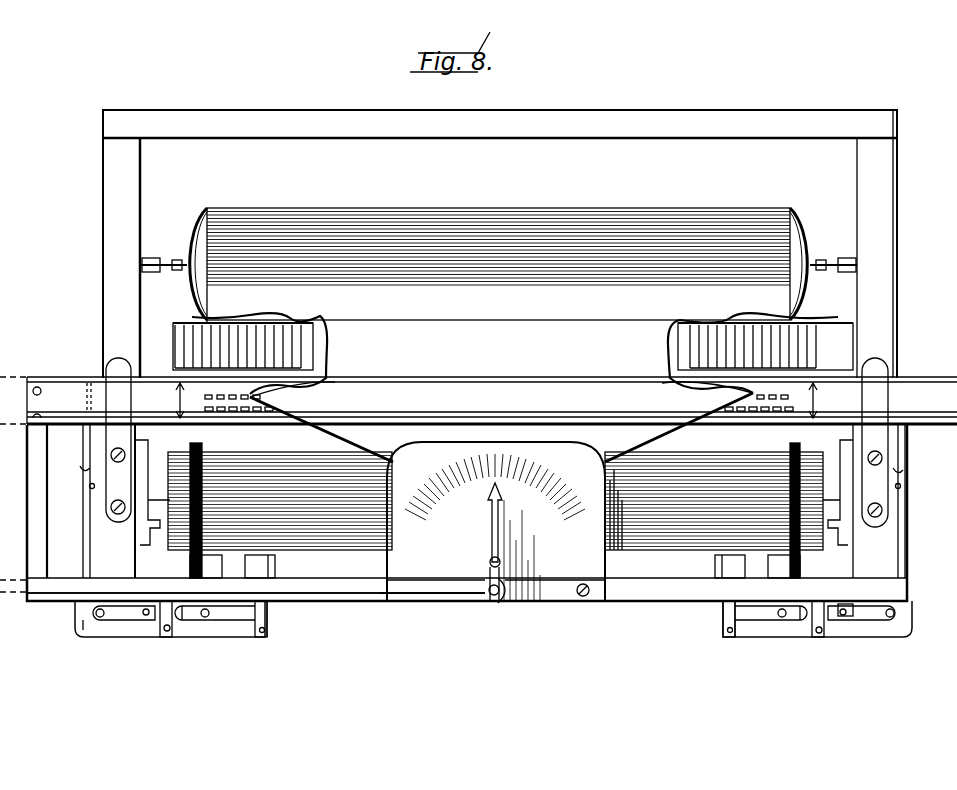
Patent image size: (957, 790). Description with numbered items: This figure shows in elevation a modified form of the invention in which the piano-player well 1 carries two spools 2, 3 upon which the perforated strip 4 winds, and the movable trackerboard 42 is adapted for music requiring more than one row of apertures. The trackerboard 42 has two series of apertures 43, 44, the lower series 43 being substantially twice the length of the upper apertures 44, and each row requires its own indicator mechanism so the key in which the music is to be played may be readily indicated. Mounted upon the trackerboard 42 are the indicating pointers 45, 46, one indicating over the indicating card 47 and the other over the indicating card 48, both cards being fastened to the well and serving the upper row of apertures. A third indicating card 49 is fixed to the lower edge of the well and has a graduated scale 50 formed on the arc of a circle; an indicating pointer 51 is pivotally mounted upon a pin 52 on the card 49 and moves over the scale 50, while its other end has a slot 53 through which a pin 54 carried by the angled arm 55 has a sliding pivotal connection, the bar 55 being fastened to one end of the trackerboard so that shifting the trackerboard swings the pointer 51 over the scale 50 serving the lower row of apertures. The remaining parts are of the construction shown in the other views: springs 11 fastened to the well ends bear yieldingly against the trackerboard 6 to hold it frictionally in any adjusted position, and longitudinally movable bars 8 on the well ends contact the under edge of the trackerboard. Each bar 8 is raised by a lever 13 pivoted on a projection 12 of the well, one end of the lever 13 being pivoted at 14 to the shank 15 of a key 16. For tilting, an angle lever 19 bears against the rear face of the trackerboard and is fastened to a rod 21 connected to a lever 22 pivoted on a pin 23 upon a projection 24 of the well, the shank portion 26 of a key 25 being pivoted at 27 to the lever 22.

The well 1 is at (883, 173).
The spool 2 is at (800, 240).
The spool 3 is at (495, 501).
The perforated strip 4 is at (498, 265).
The movable trackerboard 6 is at (288, 418).
The longitudinally movable bar 8 is at (95, 538).
The spring 11 is at (497, 442).
The projection 12 is at (848, 612).
The lever 13 is at (128, 618).
The pivot 14 is at (205, 620).
The shank 15 is at (215, 615).
The key 16 is at (190, 565).
The angle lever 19 is at (84, 455).
The rod 21 is at (84, 503).
The lever 22 is at (222, 628).
The pin 23 is at (163, 622).
The projection 24 is at (816, 640).
The key 25 is at (276, 565).
The shank portion 26 is at (268, 620).
The pivot 27 is at (268, 633).
The trackerboard 42 is at (932, 392).
The series of apertures 43 is at (735, 397).
The series of apertures 44 is at (792, 403).
The indicating pointer 45 is at (817, 385).
The indicating pointer 46 is at (178, 402).
The indicating card 47 is at (817, 332).
The indicating card 48 is at (165, 332).
The indicating card 49 is at (565, 596).
The graduated scale 50 is at (548, 458).
The indicating pointer 51 is at (488, 530).
The pin 52 is at (500, 562).
The slot 53 is at (498, 604).
The pin 54 is at (478, 594).
The angled arm 55 is at (372, 592).